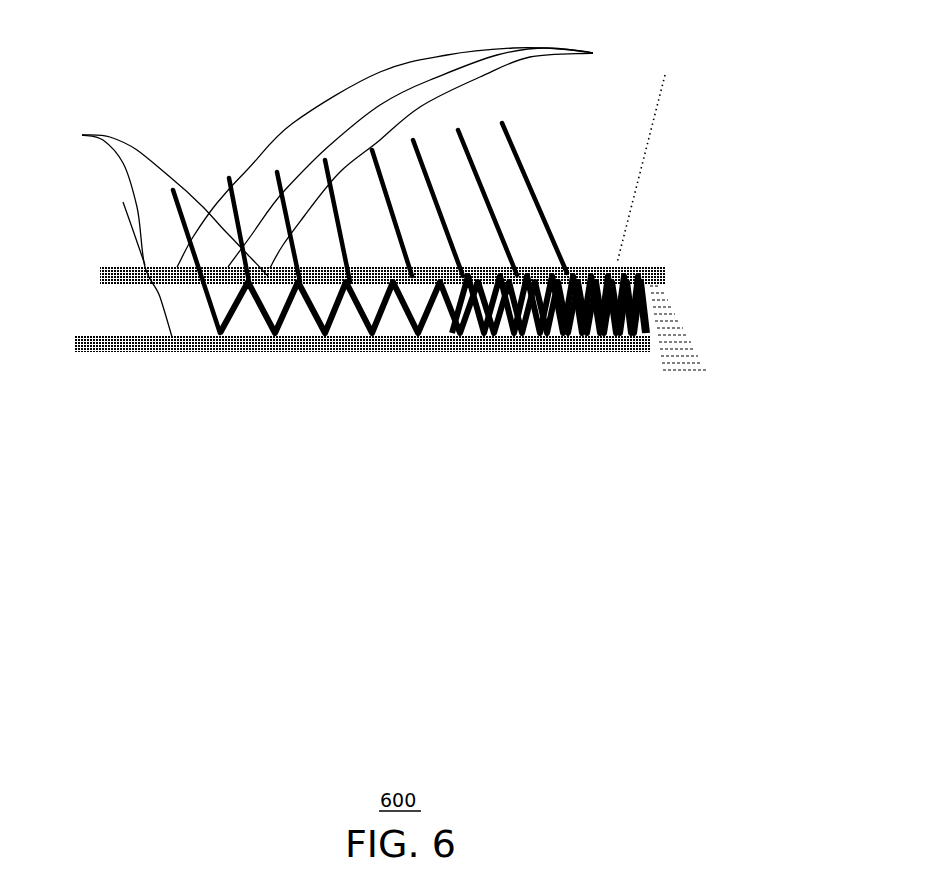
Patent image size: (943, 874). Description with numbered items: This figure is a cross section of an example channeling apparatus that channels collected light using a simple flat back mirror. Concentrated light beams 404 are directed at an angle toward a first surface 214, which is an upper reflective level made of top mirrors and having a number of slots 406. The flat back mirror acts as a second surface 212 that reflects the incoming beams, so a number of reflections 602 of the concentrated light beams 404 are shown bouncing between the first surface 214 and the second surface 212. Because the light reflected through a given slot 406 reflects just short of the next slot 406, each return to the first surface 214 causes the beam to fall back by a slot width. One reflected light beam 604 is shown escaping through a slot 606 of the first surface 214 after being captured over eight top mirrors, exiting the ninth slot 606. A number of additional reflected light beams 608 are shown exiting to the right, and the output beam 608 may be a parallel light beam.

The second surface 212 is at (172, 338).
The first surface 214 is at (593, 53).
The concentrated light beams 404 is at (133, 228).
The slots 406 is at (82, 135).
The reflections 602 is at (188, 315).
The reflected light beam 604 is at (647, 148).
The slot 606 is at (617, 263).
The additional reflected light beams 608 is at (683, 330).